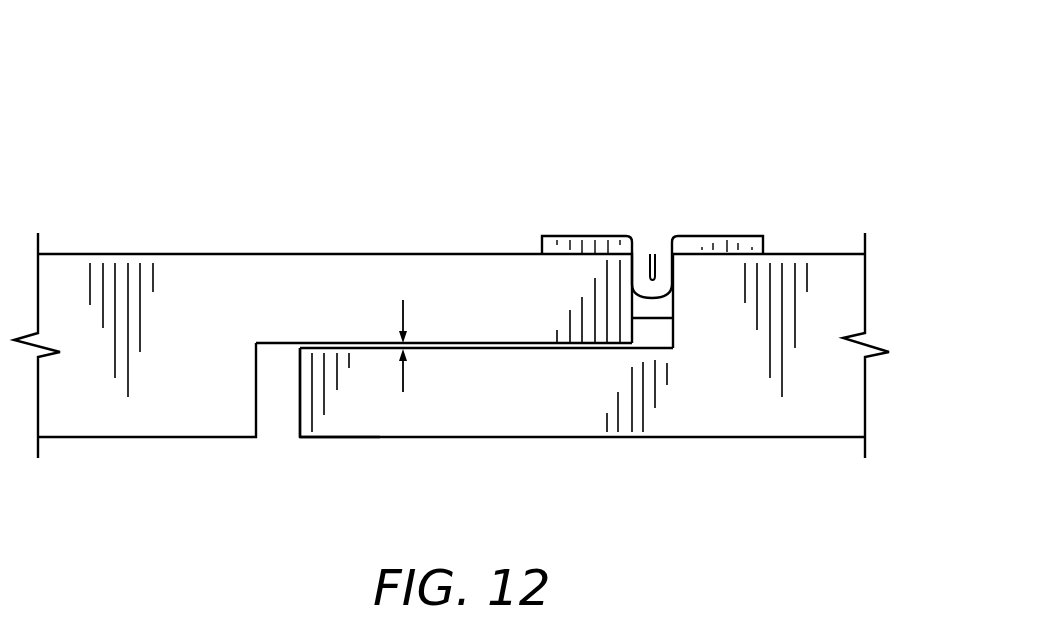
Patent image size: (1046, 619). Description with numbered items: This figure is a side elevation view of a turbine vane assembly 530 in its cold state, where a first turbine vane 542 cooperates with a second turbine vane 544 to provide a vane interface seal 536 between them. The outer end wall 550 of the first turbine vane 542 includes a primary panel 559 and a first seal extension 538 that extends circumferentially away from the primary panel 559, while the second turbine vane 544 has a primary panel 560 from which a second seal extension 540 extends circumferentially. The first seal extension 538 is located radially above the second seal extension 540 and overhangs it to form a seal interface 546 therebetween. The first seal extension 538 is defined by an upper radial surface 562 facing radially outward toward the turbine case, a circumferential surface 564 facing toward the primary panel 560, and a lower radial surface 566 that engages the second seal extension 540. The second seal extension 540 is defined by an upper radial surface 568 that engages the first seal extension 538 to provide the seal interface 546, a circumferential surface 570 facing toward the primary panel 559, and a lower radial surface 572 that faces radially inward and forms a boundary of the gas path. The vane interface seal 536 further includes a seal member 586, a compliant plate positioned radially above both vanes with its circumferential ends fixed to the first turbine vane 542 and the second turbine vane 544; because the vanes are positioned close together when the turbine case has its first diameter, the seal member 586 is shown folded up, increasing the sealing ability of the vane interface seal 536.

The turbine vane assembly 530 is at (794, 127).
The vane interface seal 536 is at (375, 138).
The first seal extension 538 is at (283, 277).
The second seal extension 540 is at (445, 428).
The first turbine vane 542 is at (190, 139).
The second turbine vane 544 is at (716, 487).
The seal interface 546 is at (403, 308).
The outer end wall 550 is at (150, 173).
The primary panel 559 is at (190, 277).
The primary panel 560 is at (748, 422).
The upper radial surface 562 is at (437, 254).
The circumferential surface 564 is at (638, 318).
The lower radial surface 566 is at (448, 344).
The upper radial surface 568 is at (503, 347).
The circumferential surface 570 is at (300, 403).
The lower radial surface 572 is at (357, 437).
The seal member 586 is at (695, 218).